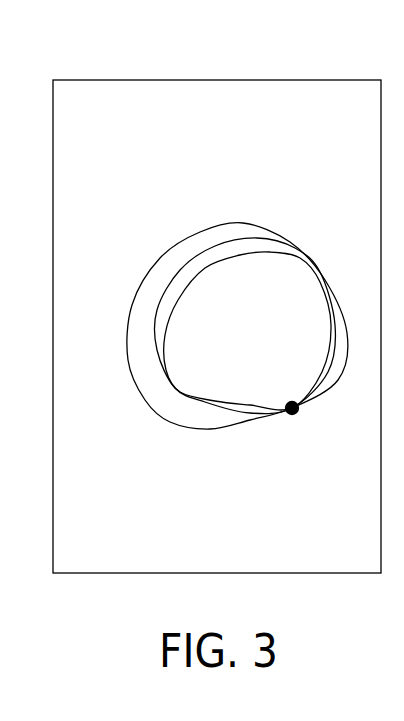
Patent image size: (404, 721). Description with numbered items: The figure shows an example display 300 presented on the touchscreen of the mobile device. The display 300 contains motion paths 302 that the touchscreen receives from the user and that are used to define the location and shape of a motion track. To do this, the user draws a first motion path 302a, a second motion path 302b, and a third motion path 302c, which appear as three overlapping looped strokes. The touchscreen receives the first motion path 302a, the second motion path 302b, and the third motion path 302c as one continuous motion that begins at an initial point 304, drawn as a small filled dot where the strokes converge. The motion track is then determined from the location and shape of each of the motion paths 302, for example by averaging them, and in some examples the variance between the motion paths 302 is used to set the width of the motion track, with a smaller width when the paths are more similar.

The display 300 is at (189, 80).
The motion paths 302 is at (192, 203).
The first motion path 302a is at (150, 288).
The second motion path 302b is at (155, 327).
The third motion path 302c is at (172, 397).
The initial point 304 is at (295, 415).